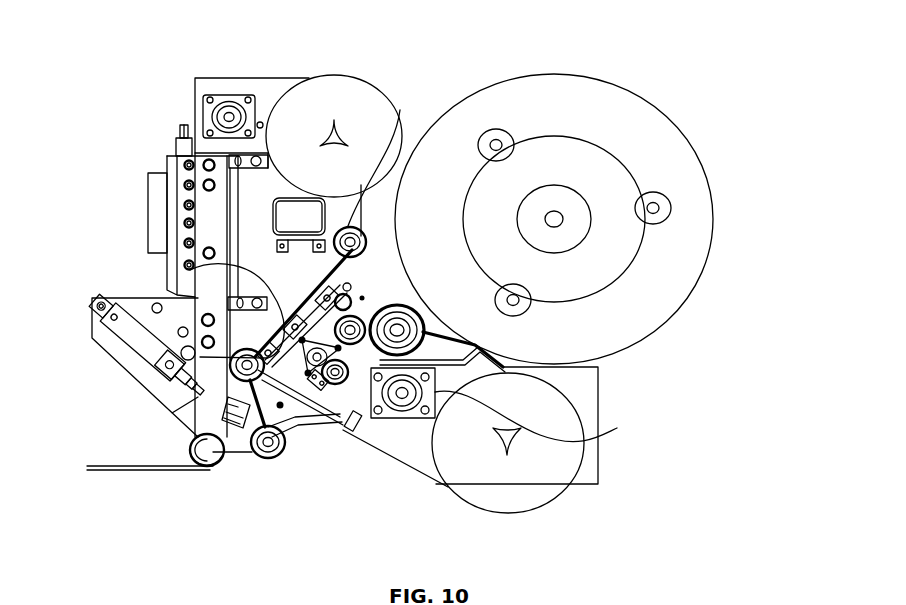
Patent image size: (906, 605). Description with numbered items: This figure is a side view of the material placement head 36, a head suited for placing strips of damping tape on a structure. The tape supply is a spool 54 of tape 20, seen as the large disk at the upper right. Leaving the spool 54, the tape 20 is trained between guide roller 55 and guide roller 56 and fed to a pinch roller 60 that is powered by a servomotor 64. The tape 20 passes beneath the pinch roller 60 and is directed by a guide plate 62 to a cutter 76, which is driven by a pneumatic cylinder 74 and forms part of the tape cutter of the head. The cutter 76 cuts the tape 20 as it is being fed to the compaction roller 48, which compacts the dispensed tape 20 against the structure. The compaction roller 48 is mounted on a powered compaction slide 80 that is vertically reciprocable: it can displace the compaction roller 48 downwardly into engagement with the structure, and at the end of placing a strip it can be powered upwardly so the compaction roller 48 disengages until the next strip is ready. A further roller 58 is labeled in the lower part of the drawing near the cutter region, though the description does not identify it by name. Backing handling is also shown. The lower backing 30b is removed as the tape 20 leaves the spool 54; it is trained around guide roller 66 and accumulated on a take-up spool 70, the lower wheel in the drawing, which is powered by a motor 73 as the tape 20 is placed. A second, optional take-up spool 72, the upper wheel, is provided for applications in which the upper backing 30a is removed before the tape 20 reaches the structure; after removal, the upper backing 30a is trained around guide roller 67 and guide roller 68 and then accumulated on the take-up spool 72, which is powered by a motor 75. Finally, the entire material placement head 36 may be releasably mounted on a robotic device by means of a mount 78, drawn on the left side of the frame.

The tape 20 is at (115, 470).
The upper backing 30a is at (190, 270).
The lower backing 30b is at (392, 457).
The material placement head 36 is at (728, 227).
The compaction roller 48 is at (197, 445).
The spool 54 is at (675, 153).
The guide roller 55 is at (364, 298).
The guide roller 56 is at (410, 372).
The roller 58 is at (247, 450).
The pinch roller 60 is at (336, 385).
The guide plate 62 is at (308, 376).
The servomotor 64 is at (290, 258).
The guide roller 66 is at (268, 458).
The guide roller 67 is at (194, 355).
The guide roller 68 is at (405, 168).
The take-up spool 70 is at (527, 478).
The take-up spool 72 is at (336, 98).
The motor 73 is at (539, 416).
The pneumatic cylinder 74 is at (115, 337).
The motor 75 is at (237, 100).
The cutter 76 is at (207, 467).
The mount 78 is at (157, 230).
The powered compaction slide 80 is at (190, 196).